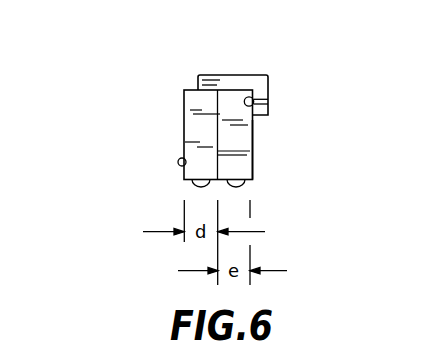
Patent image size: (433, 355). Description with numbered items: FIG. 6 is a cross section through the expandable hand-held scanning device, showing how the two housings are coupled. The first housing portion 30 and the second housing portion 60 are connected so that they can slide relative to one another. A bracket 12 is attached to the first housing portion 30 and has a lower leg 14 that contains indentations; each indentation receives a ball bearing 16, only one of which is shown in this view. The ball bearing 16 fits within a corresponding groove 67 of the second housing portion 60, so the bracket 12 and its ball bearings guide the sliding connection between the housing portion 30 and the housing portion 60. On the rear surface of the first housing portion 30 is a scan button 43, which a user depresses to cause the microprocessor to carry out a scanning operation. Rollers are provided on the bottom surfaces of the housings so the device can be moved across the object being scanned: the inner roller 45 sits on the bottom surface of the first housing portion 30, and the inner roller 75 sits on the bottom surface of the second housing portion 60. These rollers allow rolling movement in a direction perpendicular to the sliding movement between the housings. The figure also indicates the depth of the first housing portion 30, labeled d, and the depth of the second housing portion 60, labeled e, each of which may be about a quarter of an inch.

The bracket 12 is at (215, 75).
The lower leg 14 is at (268, 81).
The ball bearing 16 is at (268, 98).
The first housing portion 30 is at (184, 133).
The scan button 43 is at (178, 162).
The inner roller 45 is at (197, 187).
The second housing portion 60 is at (253, 152).
The groove 67 is at (245, 98).
The inner roller 75 is at (243, 187).